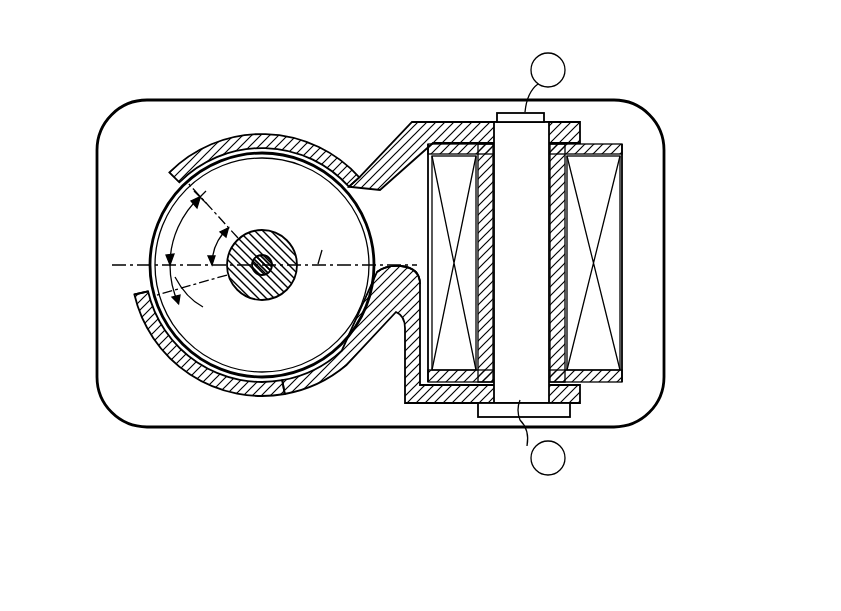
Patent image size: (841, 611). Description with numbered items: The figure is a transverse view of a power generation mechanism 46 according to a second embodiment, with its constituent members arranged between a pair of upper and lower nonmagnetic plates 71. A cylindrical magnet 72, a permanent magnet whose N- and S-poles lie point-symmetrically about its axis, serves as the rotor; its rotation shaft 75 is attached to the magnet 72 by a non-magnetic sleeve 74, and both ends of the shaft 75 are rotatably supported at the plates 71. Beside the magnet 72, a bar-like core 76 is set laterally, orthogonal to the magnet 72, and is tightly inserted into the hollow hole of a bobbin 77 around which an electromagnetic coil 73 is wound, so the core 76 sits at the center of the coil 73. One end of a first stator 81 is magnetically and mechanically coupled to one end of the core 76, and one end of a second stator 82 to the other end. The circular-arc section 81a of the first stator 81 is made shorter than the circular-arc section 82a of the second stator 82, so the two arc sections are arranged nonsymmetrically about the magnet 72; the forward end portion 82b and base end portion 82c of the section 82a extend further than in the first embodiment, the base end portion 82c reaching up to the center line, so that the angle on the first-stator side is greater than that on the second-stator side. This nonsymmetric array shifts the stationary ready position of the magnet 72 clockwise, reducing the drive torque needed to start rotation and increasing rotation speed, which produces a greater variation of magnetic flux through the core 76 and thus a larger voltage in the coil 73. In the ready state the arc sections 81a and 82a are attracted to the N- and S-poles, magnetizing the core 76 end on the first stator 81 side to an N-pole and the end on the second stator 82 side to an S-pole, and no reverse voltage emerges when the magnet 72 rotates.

The power generation mechanism 46 is at (490, 88).
The nonmagnetic plate 71 is at (608, 405).
The cylindrical magnet 72 is at (240, 172).
The electromagnetic coil 73 is at (617, 292).
The non-magnetic sleeve 74 is at (277, 297).
The rotation shaft 75 is at (254, 232).
The bar-like core 76 is at (538, 165).
The bobbin 77 is at (563, 227).
The first stator 81 is at (392, 148).
The circular-arc section of first stator 81a is at (247, 142).
The second stator 82 is at (423, 393).
The circular-arc section of second stator 82a is at (245, 393).
The forward end portion 82b is at (147, 318).
The base end portion 82c is at (392, 268).